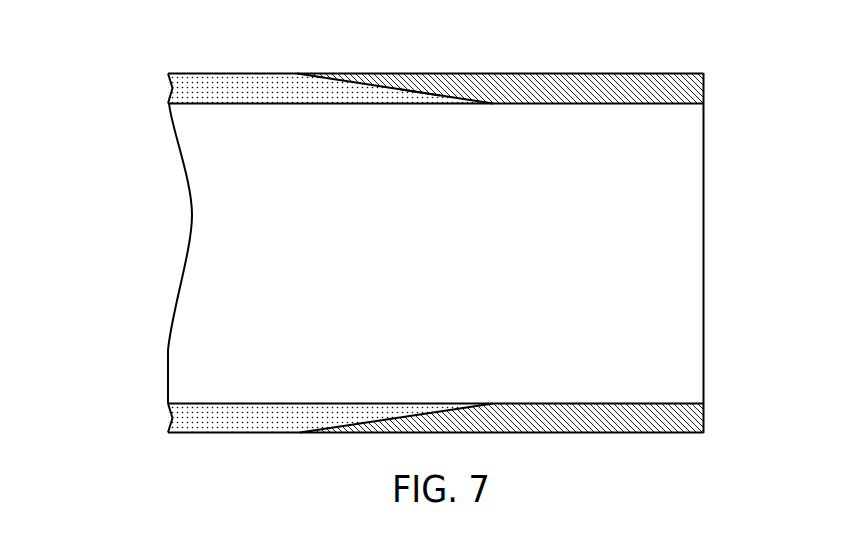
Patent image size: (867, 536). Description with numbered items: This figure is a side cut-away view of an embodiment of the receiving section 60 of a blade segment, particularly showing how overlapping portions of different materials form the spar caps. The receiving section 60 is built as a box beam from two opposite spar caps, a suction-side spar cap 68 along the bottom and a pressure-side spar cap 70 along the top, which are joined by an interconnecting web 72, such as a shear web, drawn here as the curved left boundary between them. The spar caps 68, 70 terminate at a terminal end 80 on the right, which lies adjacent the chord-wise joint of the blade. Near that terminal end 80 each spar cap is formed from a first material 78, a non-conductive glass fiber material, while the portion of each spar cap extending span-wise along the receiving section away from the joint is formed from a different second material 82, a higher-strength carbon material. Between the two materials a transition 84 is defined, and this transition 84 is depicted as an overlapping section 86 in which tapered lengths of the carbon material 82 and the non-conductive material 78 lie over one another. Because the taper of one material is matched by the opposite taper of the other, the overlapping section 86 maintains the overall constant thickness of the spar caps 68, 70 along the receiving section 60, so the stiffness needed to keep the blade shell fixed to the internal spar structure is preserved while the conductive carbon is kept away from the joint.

The receiving section 60 is at (402, 251).
The spar cap (suction side) 68 is at (234, 435).
The spar cap (pressure side) 70 is at (232, 73).
The interconnecting web 72 is at (184, 316).
The first material 78 is at (620, 80).
The terminal end 80 is at (705, 143).
The second material 82 is at (282, 413).
The transition 84 is at (400, 88).
The overlapping section 86 is at (416, 74).